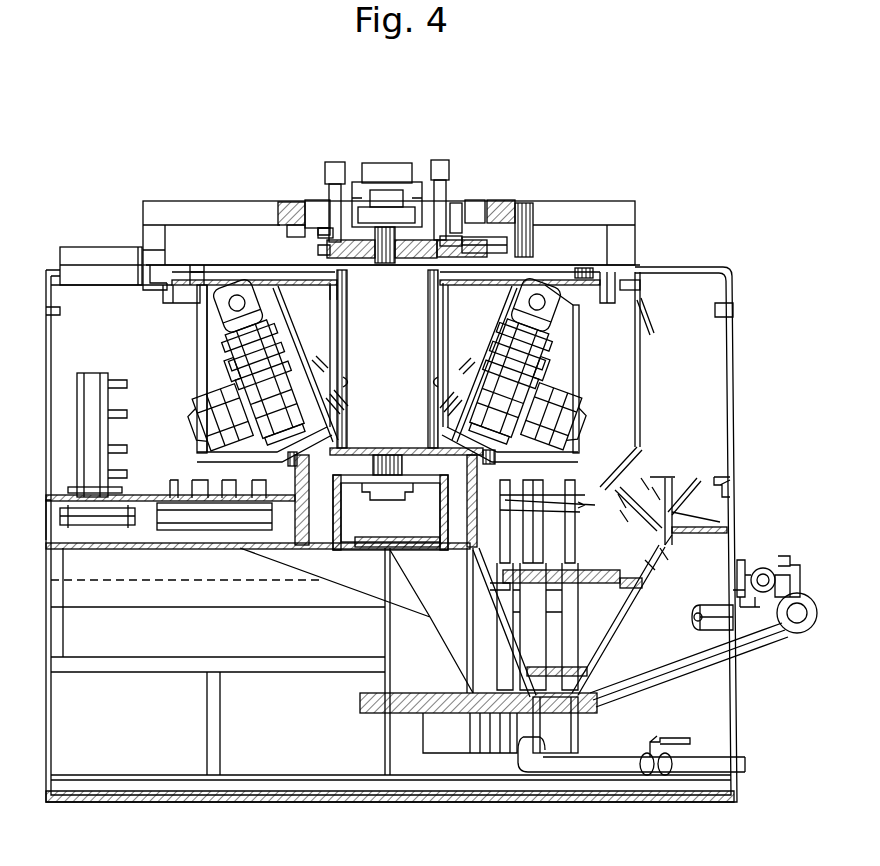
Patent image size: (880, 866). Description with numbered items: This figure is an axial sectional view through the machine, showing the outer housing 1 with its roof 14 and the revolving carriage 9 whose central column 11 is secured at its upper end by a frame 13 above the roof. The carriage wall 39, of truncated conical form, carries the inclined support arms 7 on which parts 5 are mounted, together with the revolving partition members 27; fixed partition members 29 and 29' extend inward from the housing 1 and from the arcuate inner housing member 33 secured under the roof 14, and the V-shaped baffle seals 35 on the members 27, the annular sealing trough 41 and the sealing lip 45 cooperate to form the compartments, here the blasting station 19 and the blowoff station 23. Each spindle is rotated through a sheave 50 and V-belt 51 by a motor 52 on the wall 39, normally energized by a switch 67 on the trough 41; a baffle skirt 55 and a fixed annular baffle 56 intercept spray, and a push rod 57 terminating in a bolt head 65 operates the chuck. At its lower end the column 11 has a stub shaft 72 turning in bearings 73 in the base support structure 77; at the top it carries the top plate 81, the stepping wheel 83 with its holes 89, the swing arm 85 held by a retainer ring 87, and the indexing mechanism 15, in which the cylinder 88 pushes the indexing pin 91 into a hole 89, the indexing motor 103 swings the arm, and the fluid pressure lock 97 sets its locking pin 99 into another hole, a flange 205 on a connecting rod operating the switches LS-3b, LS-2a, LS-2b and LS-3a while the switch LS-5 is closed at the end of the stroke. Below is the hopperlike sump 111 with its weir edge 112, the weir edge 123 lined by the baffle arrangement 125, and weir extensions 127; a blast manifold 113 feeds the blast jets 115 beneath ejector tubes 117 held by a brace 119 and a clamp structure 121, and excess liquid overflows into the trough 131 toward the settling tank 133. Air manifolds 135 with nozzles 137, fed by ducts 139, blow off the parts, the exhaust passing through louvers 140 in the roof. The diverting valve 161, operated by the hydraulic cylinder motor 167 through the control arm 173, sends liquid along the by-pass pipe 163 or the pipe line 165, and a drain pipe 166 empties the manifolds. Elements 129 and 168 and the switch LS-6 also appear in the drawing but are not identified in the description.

The housing 1 is at (730, 690).
The parts 5 is at (214, 430).
The support arms 7 is at (280, 400).
The revolving carriage 9 is at (465, 356).
The central column 11 is at (406, 362).
The frame 13 is at (608, 205).
The roof 14 is at (693, 268).
The indexing mechanism 15 is at (312, 133).
The blasting station 19 is at (537, 579).
The blowoff station 23 is at (111, 316).
The partition members 27 is at (200, 375).
The partition members 29 is at (176, 368).
The partition members 29' is at (621, 359).
The arcuate inner housing member 33 is at (642, 303).
The V-shaped baffle seal 35 is at (197, 438).
The carriage wall 39 is at (270, 432).
The annular sealing trough 41 is at (172, 303).
The sealing lip 45 is at (148, 287).
The sheave 50 is at (318, 364).
The V-belt 51 is at (296, 300).
The motor 52 is at (250, 296).
The baffle skirt 55 is at (298, 460).
The fixed annular baffle 56 is at (240, 380).
The push rod 57 is at (330, 405).
The bolt head 65 is at (343, 380).
The switch 67 is at (197, 270).
The stub shaft 72 is at (402, 462).
The bearings 73 is at (405, 495).
The base support structure 77 is at (390, 512).
The top plate 81 is at (416, 260).
The stepping wheel 83 is at (330, 283).
The swing arm 85 is at (476, 213).
The retainer ring 87 is at (389, 262).
The cylinder 88 is at (442, 160).
The holes 89 is at (358, 260).
The indexing pin 91 is at (452, 246).
The fluid pressure lock 97 is at (336, 162).
The locking pin 99 is at (323, 238).
The indexing motor 103 is at (478, 253).
The hopperlike sump 111 is at (326, 577).
The weir edge 112 is at (674, 480).
The blast manifold 113 is at (470, 740).
The blast jets 115 is at (564, 708).
The ejector tubes 117 is at (572, 513).
The brace 119 is at (594, 676).
The clamp structure 121 is at (596, 570).
The weir edge 123 is at (719, 477).
The baffle arrangement 125 is at (647, 457).
The extensions 127 is at (685, 492).
The channel 129 is at (673, 538).
The trough 131 is at (726, 528).
The settling tank 133 is at (220, 661).
The air manifolds 135 is at (92, 374).
The nozzles 137 is at (122, 414).
The ducts 139 is at (106, 525).
The louvers 140 is at (90, 250).
The diverting valve 161 is at (800, 593).
The by-pass pipe 163 is at (705, 630).
The pipe line 165 is at (672, 667).
The drain pipe 166 is at (614, 757).
The hydraulic cylinder motor 167 is at (763, 568).
The valve handle 168 is at (666, 738).
The control arm 173 is at (46, 315).
The flange 205 is at (322, 228).
The switch LS-2a is at (288, 200).
The switch LS-2b is at (290, 230).
The switch LS-3a is at (462, 225).
The switch LS-3b is at (456, 203).
The switch LS-5 is at (525, 203).
The limit switch LS-6 is at (733, 594).